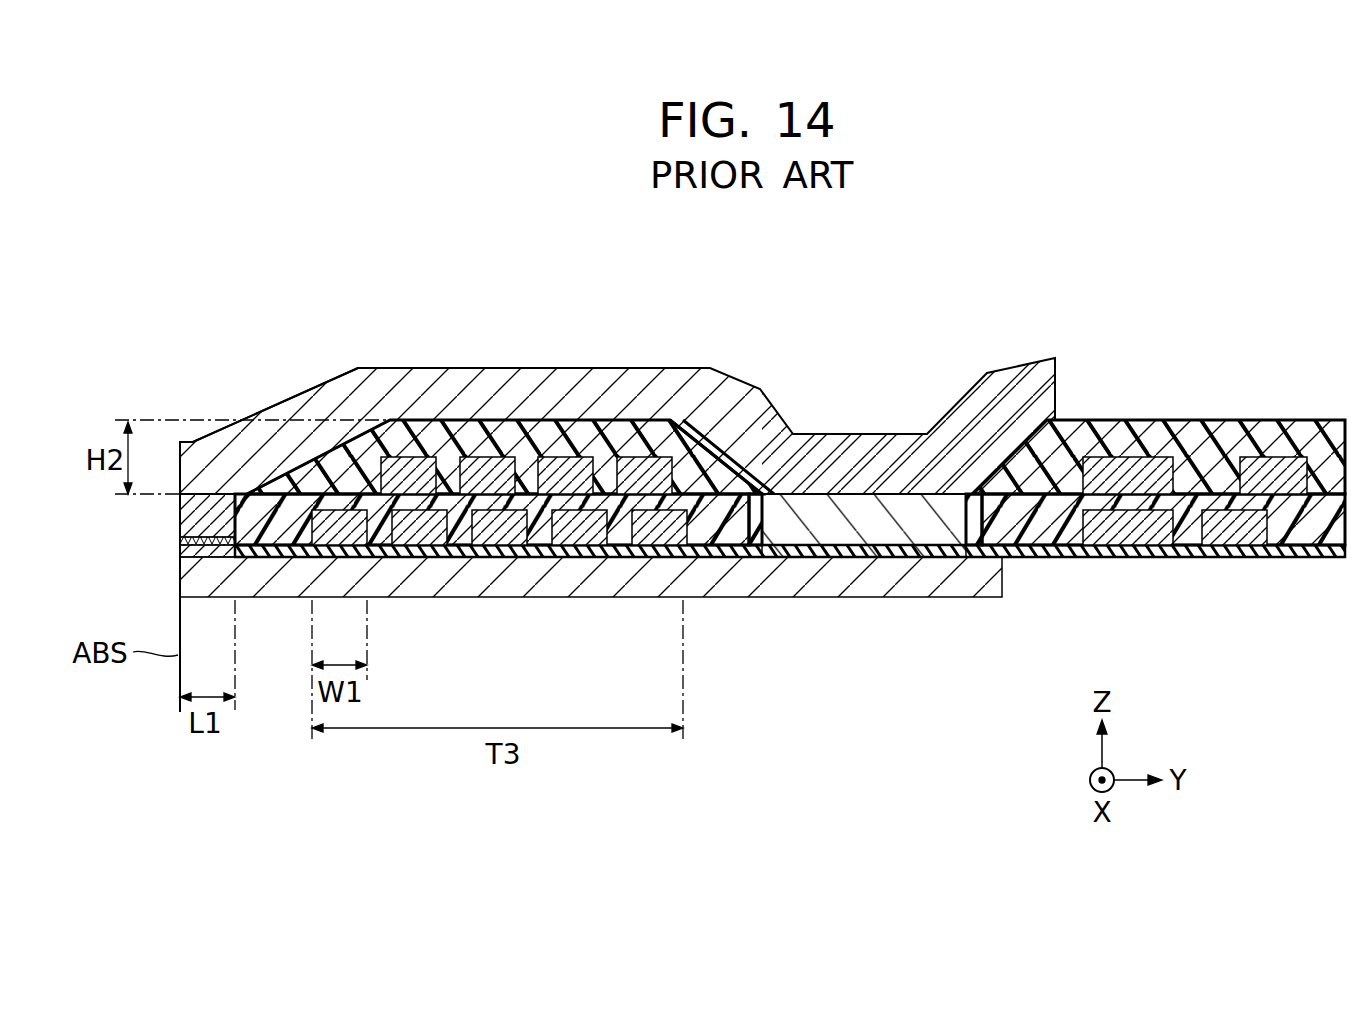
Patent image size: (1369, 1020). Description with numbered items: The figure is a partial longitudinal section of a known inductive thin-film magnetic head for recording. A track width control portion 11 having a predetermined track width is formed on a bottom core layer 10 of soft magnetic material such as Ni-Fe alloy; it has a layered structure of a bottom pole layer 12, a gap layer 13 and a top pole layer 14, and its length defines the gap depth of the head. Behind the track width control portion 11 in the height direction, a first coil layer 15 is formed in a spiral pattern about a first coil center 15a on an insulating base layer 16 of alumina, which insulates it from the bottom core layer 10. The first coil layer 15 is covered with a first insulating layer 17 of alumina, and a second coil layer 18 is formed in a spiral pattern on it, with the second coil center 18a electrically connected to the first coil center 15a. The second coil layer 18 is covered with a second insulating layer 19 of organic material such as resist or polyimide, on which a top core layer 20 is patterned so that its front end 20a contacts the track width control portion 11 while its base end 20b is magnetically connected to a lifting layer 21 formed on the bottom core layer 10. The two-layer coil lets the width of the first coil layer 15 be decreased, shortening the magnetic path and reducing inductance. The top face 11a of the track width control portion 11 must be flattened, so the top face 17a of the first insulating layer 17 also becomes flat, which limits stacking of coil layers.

The bottom core layer 10 is at (884, 572).
The track width control portion 11 is at (694, 548).
The top face of the track width control portion 11a is at (207, 493).
The bottom pole layer 12 is at (719, 573).
The gap layer 13 is at (180, 541).
The top pole layer 14 is at (200, 517).
The first coil layer 15 is at (809, 508).
The first coil center 15a is at (1107, 527).
The insulating base layer 16 is at (740, 548).
The first insulating layer 17 is at (534, 502).
The top face of the first insulating layer 17a is at (788, 440).
The second coil layer 18 is at (518, 452).
The second coil center 18a is at (1153, 470).
The second insulating layer 19 is at (703, 460).
The top core layer 20 is at (611, 398).
The front end of the top core layer 20a is at (200, 457).
The base end of the top core layer 20b is at (860, 460).
The lifting layer 21 is at (818, 525).